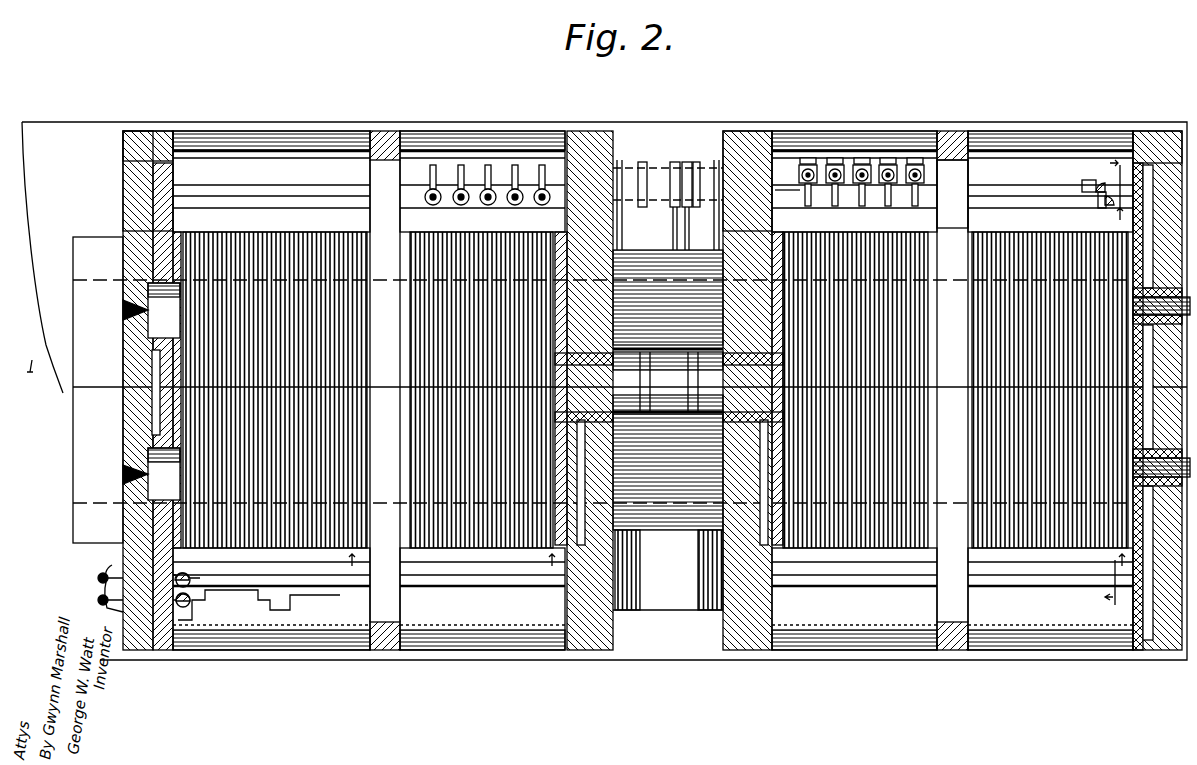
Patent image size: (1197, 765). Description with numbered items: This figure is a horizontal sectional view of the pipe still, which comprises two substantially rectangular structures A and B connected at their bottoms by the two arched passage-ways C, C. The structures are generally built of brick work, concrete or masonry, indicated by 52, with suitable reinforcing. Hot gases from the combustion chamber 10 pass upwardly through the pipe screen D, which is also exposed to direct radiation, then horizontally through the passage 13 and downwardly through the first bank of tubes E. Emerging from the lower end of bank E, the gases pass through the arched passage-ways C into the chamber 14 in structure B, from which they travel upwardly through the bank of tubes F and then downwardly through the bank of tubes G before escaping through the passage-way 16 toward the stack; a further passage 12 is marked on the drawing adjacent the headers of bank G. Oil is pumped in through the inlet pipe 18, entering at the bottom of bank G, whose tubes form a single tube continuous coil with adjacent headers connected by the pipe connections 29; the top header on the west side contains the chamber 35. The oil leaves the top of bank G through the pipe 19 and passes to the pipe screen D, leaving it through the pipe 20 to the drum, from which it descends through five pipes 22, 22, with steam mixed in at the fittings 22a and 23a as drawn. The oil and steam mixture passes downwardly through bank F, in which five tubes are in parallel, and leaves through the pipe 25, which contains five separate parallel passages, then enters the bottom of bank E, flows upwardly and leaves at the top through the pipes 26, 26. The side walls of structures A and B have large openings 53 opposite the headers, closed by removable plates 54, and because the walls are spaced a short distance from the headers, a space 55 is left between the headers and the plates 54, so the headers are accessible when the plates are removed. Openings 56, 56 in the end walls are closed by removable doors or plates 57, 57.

The combustion chamber 10 is at (560, 559).
The inlet passage 12 is at (1120, 380).
The passage 13 is at (1114, 558).
The chamber 14 is at (1111, 216).
The passage-way 16 is at (360, 559).
The inlet pipe 18 is at (1135, 178).
The pipe 19 is at (1148, 190).
The pipe 20 is at (98, 424).
The pipes 22 is at (940, 197).
The partition 22a is at (786, 183).
The valves 23a is at (850, 165).
The pipe 25 is at (548, 180).
The pipes 26 is at (542, 189).
The pipe connections 29 is at (1085, 194).
The chamber 35 is at (36, 381).
The brick work 52 is at (600, 632).
The openings 53 is at (283, 140).
The plates 54 is at (222, 150).
The space 55 is at (345, 160).
The openings 56 is at (1159, 387).
The doors 57 is at (712, 397).
The rectangular structure A is at (160, 175).
The rectangular structure B is at (745, 175).
The arched passage-ways C is at (674, 322).
The pipe screen D is at (262, 272).
The first bank of tubes E is at (530, 285).
The bank of tubes F is at (870, 270).
The bank of tubes G is at (1030, 440).